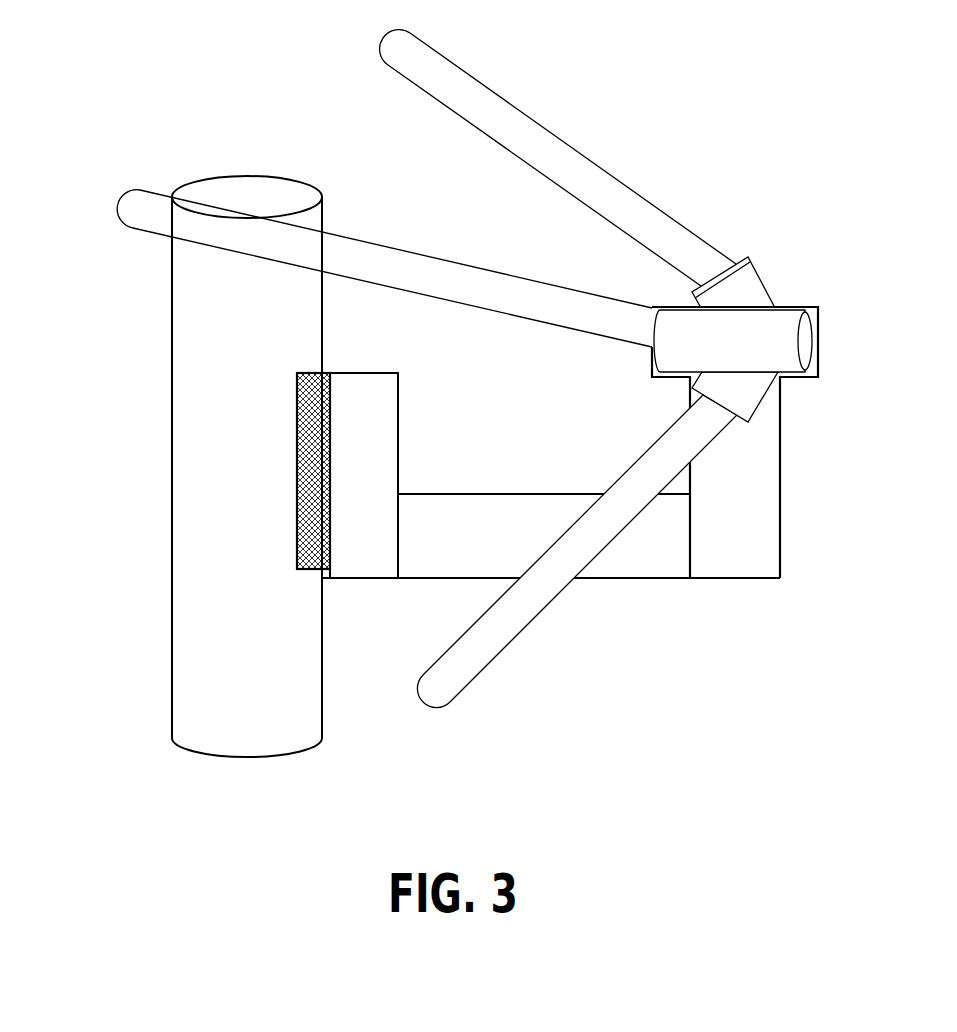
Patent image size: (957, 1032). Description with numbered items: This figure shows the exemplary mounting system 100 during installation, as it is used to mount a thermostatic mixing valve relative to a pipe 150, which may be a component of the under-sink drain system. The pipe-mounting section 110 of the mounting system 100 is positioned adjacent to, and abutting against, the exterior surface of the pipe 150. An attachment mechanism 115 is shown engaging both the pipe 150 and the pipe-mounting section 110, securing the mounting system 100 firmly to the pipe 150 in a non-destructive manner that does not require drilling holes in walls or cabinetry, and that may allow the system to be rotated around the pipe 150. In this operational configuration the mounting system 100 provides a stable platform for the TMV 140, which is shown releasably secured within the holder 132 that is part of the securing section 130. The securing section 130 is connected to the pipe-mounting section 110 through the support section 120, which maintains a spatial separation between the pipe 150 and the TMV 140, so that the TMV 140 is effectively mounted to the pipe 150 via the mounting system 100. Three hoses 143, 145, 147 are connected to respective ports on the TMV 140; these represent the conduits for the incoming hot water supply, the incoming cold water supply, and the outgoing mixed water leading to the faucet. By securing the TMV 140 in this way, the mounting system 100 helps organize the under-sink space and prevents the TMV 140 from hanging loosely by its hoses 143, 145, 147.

The mounting system 100 is at (848, 269).
The pipe-mounting section 110 is at (360, 573).
The attachment mechanism 115 is at (303, 487).
The support section 120 is at (607, 568).
The securing section 130 is at (770, 452).
The holder 132 is at (812, 363).
The TMV 140 is at (748, 325).
The hose 143 is at (445, 305).
The hose 145 is at (592, 176).
The hose 147 is at (487, 635).
The pipe 150 is at (218, 568).